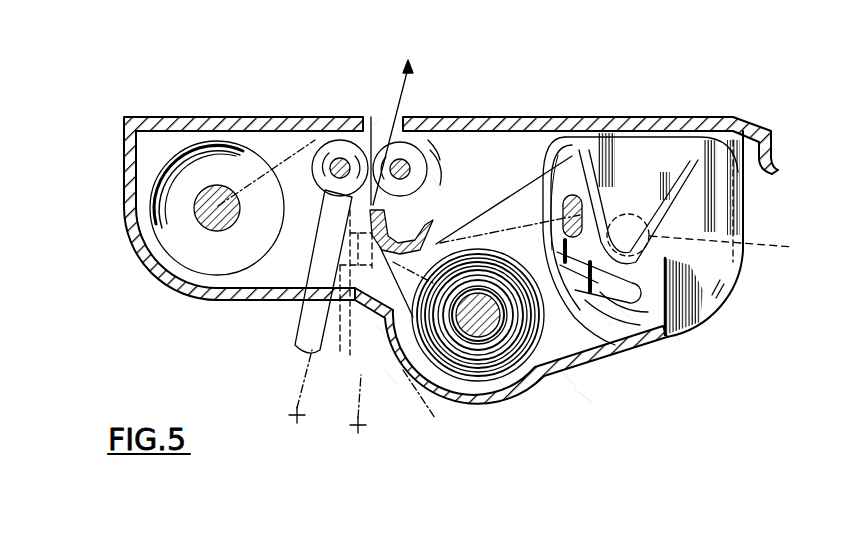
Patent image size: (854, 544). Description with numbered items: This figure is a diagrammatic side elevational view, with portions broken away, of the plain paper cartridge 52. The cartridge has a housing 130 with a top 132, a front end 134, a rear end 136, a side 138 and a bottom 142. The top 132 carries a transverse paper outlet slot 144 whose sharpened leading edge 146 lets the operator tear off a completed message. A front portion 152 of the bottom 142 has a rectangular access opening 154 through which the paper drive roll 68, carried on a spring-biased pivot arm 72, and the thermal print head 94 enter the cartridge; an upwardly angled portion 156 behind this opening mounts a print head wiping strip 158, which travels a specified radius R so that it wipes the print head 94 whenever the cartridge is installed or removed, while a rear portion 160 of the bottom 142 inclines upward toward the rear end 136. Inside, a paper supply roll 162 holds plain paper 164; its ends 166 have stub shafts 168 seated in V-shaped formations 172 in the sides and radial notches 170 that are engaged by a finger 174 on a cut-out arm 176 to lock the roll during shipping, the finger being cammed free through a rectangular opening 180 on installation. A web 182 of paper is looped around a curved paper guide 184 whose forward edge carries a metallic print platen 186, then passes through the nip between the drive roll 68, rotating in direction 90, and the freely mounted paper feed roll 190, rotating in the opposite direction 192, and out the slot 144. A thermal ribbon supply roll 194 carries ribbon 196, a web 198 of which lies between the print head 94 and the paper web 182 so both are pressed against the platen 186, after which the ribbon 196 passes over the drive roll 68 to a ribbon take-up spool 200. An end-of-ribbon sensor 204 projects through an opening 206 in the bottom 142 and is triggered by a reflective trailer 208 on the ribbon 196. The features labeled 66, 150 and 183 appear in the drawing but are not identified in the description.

The plain paper cartridge 52 is at (170, 112).
The lower housing curve 66 is at (128, 233).
The paper drive roll 68 is at (346, 141).
The pivot arm 72 is at (322, 250).
The arrow indicating direction of rotation of the drive roll 90 is at (334, 197).
The thermal print head 94 is at (355, 370).
The housing 130 is at (733, 117).
The top 132 is at (668, 117).
The front end 134 is at (124, 154).
The rear end 136 is at (747, 213).
The side 138 is at (700, 307).
The bottom 142 is at (583, 398).
The paper outlet slot 144 is at (400, 120).
The leading edge of the slot 146 is at (374, 150).
The flange 150 is at (775, 172).
The front portion of the cartridge bottom 152 is at (200, 298).
The access opening 154 is at (284, 334).
The upwardly angled portion 156 is at (380, 333).
The print head wiping strip 158 is at (392, 380).
The rear portion of the cartridge bottom 160 is at (730, 291).
The paper supply roll 162 is at (603, 318).
The plain paper 164 is at (598, 335).
The end of the supply roll 166 is at (628, 158).
The stub shaft 168 is at (717, 237).
The radial notches 170 is at (597, 199).
The V-shaped formation 172 is at (727, 262).
The finger 174 is at (693, 320).
The arm 176 is at (673, 333).
The rectangular opening 180 is at (622, 312).
The web of paper 182 is at (540, 170).
The ribbon 183 is at (380, 120).
The curved paper guide 184 is at (405, 215).
The print platen 186 is at (440, 183).
The paper feed roll 190 is at (445, 168).
The arrow indicating direction of rotation of the feed roll 192 is at (440, 150).
The thermal ribbon supply roll 194 is at (478, 372).
The ribbon 196 is at (236, 258).
The web of ribbon 198 is at (273, 132).
The ribbon take-up spool 200 is at (210, 225).
The end-of-ribbon sensor 204 is at (490, 395).
The opening 206 is at (518, 398).
The reflective trailer 208 is at (565, 380).
The radius R is at (432, 410).